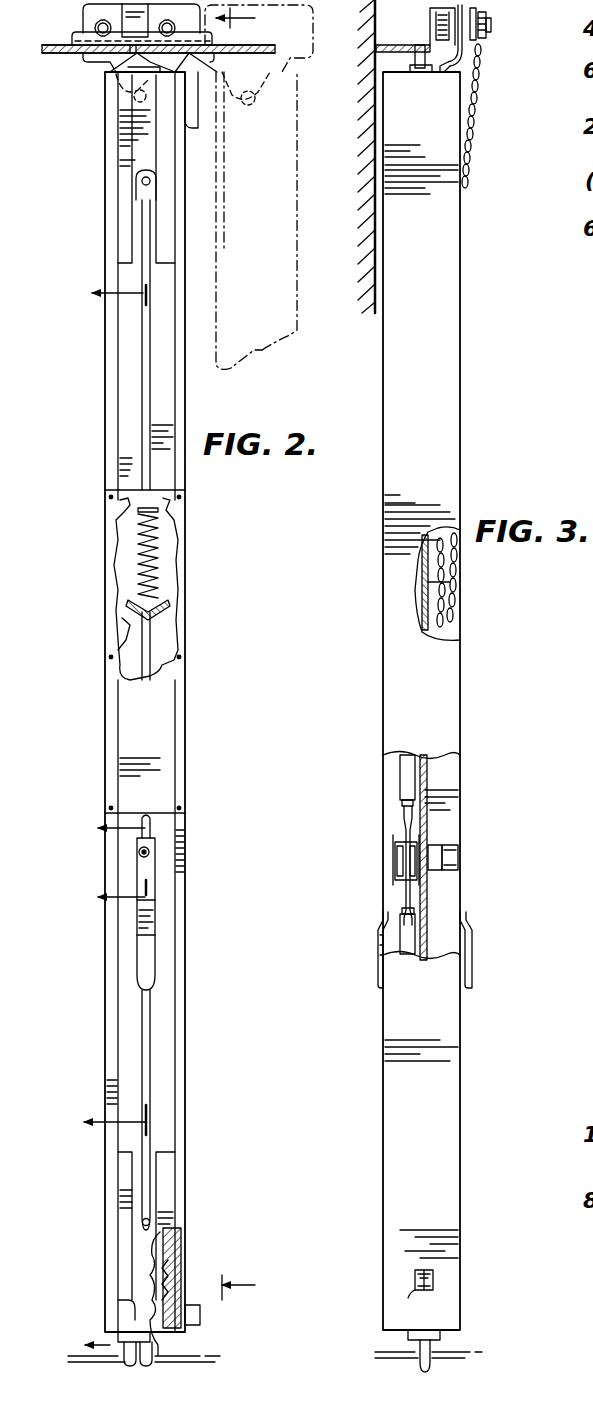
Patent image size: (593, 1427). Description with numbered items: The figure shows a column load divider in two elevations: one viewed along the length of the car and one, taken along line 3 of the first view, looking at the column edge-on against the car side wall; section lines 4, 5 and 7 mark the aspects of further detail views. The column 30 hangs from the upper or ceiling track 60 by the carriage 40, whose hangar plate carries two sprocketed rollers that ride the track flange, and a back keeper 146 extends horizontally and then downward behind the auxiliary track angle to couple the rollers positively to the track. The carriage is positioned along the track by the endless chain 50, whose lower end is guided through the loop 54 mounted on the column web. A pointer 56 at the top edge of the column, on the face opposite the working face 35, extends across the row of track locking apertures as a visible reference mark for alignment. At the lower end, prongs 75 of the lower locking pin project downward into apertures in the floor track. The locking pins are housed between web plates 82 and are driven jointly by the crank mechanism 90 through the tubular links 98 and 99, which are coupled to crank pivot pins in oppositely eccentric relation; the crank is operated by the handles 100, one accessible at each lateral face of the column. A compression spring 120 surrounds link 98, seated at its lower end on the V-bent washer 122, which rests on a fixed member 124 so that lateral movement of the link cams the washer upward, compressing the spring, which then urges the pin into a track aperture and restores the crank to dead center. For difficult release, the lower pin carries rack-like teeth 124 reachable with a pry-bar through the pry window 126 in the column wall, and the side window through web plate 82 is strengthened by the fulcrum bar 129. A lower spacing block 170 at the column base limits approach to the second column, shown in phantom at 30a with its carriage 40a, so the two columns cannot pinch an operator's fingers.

In FIG. 2, the line 3— 3 is at (245, 663).
In FIG. 2, the line 4— 4 is at (106, 314).
In FIG. 2, the line 5— 5 is at (101, 1221).
In FIG. 2, the line 7— 7 is at (107, 870).
In FIG. 2, the column 30 is at (188, 407).
In FIG. 3, the column 30 is at (463, 284).
In FIG. 2, the second column 30a is at (285, 302).
In FIG. 2, the working face 35 is at (100, 462).
In FIG. 2, the carriage 40 is at (98, 66).
In FIG. 3, the carriage 40 is at (478, 64).
In FIG. 2, the second carriage 40a is at (307, 68).
In FIG. 3, the endless chain 50 is at (475, 132).
In FIG. 3, the loop 54 is at (450, 587).
In FIG. 2, the pointer 56 is at (192, 97).
In FIG. 2, the upper track 60 is at (63, 57).
In FIG. 3, the upper track 60 is at (385, 44).
In FIG. 2, the locking prongs 75 is at (160, 1354).
In FIG. 3, the locking prongs 75 is at (440, 1354).
In FIG. 2, the web plate 82 is at (163, 1188).
In FIG. 2, the crank mechanism 90 is at (160, 870).
In FIG. 3, the crank mechanism 90 is at (395, 828).
In FIG. 2, the tubular link 98 is at (160, 642).
In FIG. 3, the tubular link 98 is at (400, 774).
In FIG. 2, the tubular link 99 is at (160, 1040).
In FIG. 3, the tubular link 99 is at (408, 937).
In FIG. 2, the handles 100 is at (158, 954).
In FIG. 3, the handles 100 is at (473, 949).
In FIG. 2, the compression spring 120 is at (128, 558).
In FIG. 2, the washer 122 is at (124, 606).
In FIG. 2, the rack-like teeth 124 is at (122, 640).
In FIG. 3, the rack-like teeth 124 is at (412, 1292).
In FIG. 2, the pry window 126 is at (175, 1280).
In FIG. 3, the pry window 126 is at (432, 1277).
In FIG. 2, the fulcrum bar 129 is at (116, 1305).
In FIG. 2, the back keeper 146 is at (130, 73).
In FIG. 2, the lower spacing block 170 is at (200, 1317).